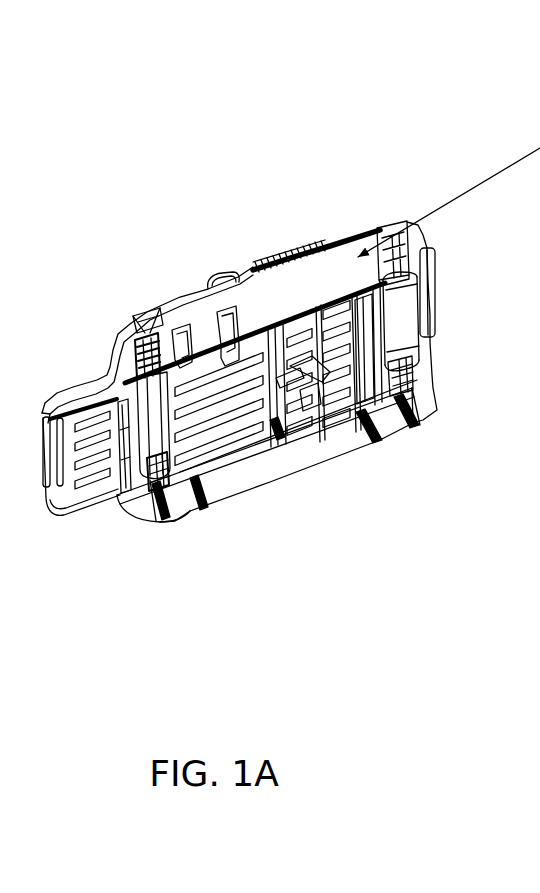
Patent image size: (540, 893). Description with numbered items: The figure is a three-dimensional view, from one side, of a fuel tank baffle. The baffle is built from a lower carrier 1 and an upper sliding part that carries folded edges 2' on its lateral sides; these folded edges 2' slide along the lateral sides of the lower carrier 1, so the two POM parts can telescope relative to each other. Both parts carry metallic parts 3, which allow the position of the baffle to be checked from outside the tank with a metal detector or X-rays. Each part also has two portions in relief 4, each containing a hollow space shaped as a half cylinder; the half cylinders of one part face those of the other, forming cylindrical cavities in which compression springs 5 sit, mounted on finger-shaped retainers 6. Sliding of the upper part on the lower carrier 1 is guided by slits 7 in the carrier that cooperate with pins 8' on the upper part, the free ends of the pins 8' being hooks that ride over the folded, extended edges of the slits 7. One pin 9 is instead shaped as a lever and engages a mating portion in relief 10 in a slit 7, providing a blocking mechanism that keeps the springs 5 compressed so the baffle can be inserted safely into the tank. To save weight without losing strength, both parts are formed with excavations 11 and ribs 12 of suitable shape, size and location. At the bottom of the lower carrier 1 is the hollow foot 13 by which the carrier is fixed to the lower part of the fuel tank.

The lower carrier 1 is at (539, 544).
The folded edges 2' is at (277, 381).
The metallic parts 3 is at (237, 263).
The portions in relief 4 is at (383, 297).
The compression springs 5 is at (391, 397).
The retainers 6 is at (177, 302).
The slits 7 is at (292, 430).
The pins 8' is at (274, 455).
The pin 9 is at (345, 378).
The mating portion in relief 10 is at (274, 385).
The excavations 11 is at (92, 445).
The ribs 12 is at (422, 428).
The hollow foot 13 is at (240, 490).